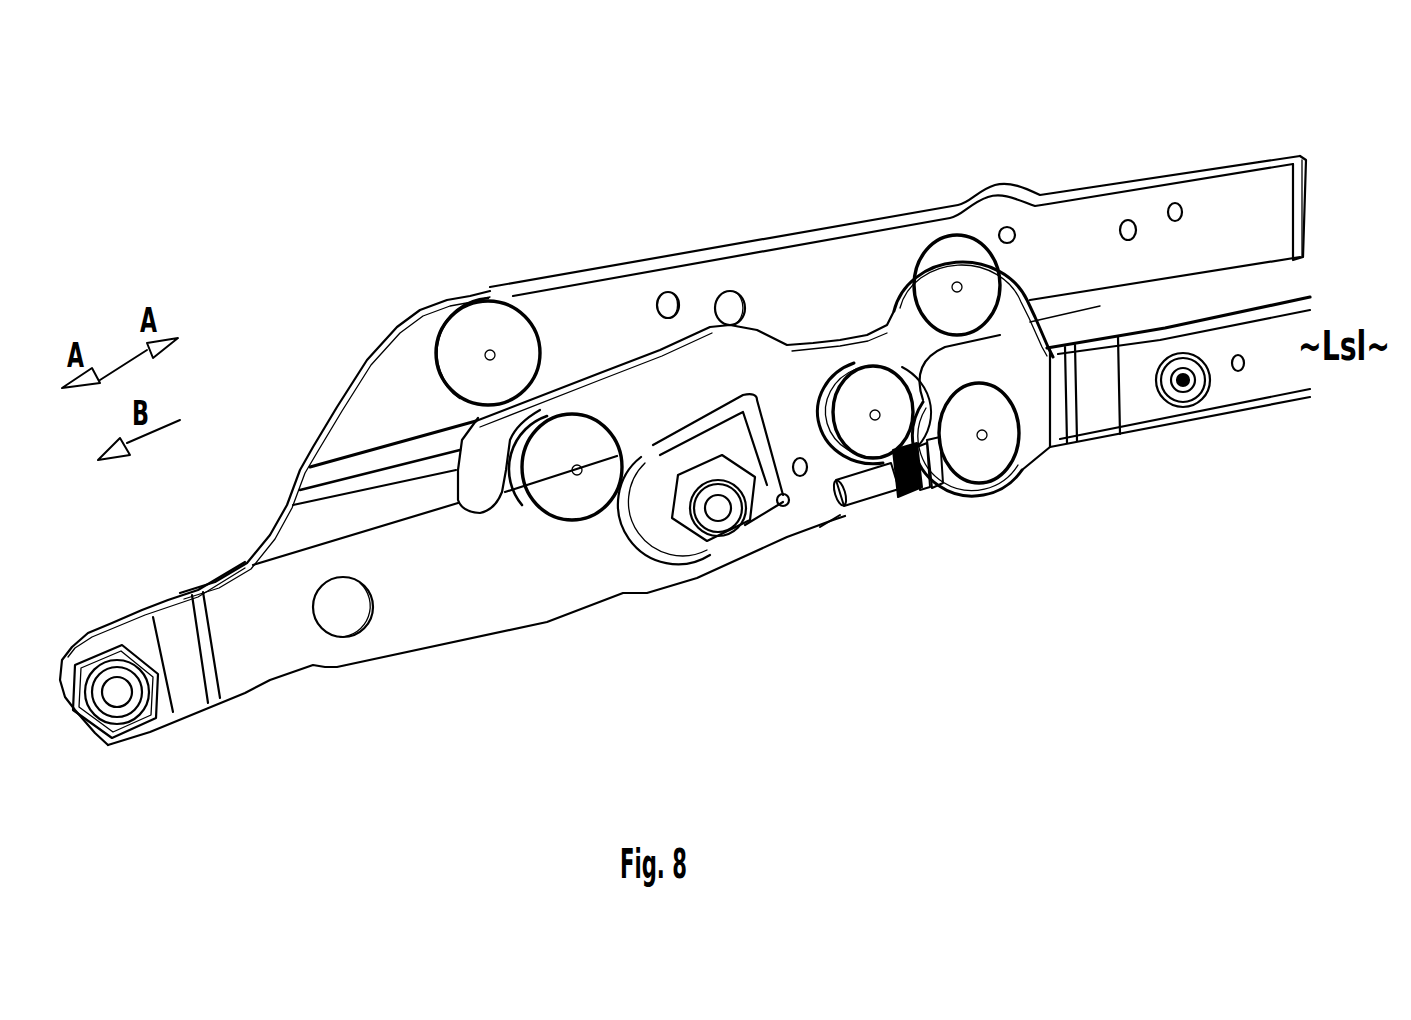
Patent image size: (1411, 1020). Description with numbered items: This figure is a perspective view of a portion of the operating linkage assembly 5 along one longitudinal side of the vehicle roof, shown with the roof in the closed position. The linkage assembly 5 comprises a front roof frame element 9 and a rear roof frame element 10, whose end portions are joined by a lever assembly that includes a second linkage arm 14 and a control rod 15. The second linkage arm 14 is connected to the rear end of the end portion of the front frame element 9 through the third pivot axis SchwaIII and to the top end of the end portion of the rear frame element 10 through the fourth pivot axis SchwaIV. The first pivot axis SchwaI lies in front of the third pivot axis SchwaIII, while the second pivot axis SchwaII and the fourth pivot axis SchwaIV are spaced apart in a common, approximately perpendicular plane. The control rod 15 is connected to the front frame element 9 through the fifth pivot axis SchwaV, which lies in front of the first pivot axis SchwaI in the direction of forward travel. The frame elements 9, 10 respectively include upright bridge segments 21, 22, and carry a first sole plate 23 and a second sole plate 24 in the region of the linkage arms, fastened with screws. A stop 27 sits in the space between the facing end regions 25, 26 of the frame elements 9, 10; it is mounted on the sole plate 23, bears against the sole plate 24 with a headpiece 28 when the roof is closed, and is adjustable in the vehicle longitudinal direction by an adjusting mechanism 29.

The linkage assembly 5 is at (363, 687).
The front roof frame element 9 is at (452, 544).
The rear roof frame element 10 is at (1166, 413).
The second linkage arm 14 is at (897, 348).
The control rod 15 is at (1180, 170).
The upright bridge segment 21 is at (162, 600).
The upright bridge segment 22 is at (1271, 301).
The first sole plate 23 is at (437, 610).
The second sole plate 24 is at (1128, 405).
The end region 25 is at (935, 488).
The end region 26 is at (844, 506).
The stop 27 is at (866, 518).
The headpiece 28 is at (912, 497).
The adjusting mechanism 29 is at (918, 492).
The fifth pivot axis SchwaV is at (488, 351).
The first pivot axis SchwaI is at (576, 465).
The third pivot axis SchwaIII is at (872, 410).
The fourth pivot axis SchwaIV is at (957, 282).
The second pivot axis SchwaII is at (982, 438).